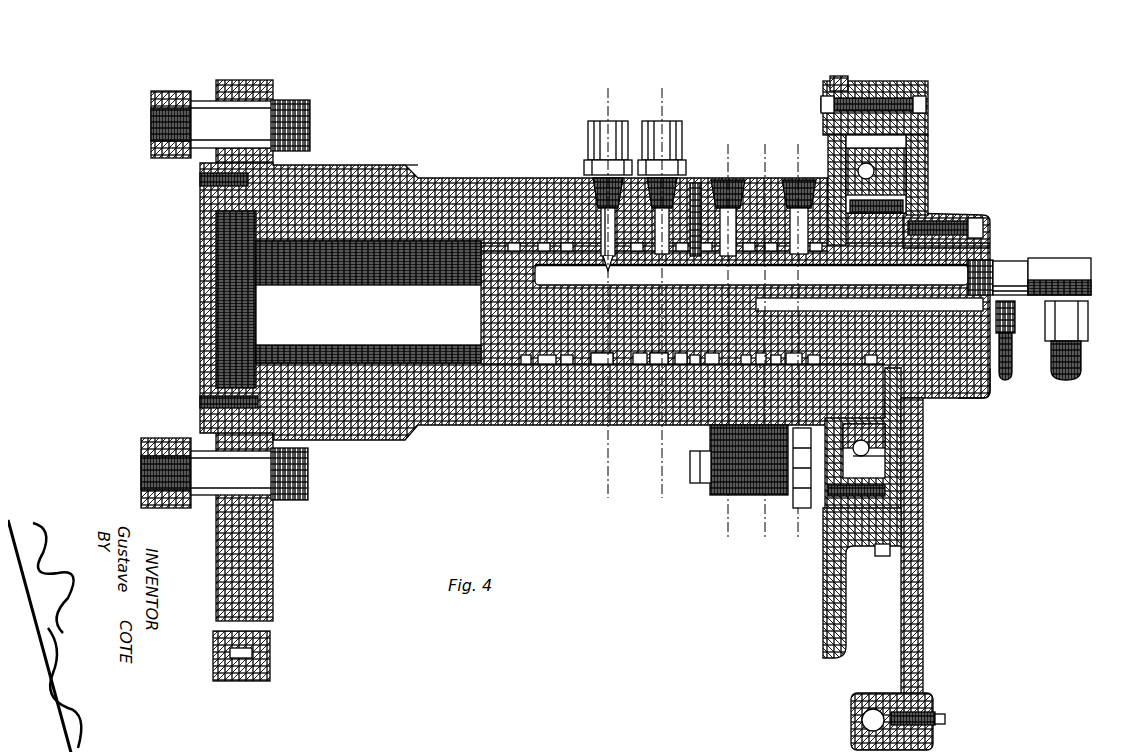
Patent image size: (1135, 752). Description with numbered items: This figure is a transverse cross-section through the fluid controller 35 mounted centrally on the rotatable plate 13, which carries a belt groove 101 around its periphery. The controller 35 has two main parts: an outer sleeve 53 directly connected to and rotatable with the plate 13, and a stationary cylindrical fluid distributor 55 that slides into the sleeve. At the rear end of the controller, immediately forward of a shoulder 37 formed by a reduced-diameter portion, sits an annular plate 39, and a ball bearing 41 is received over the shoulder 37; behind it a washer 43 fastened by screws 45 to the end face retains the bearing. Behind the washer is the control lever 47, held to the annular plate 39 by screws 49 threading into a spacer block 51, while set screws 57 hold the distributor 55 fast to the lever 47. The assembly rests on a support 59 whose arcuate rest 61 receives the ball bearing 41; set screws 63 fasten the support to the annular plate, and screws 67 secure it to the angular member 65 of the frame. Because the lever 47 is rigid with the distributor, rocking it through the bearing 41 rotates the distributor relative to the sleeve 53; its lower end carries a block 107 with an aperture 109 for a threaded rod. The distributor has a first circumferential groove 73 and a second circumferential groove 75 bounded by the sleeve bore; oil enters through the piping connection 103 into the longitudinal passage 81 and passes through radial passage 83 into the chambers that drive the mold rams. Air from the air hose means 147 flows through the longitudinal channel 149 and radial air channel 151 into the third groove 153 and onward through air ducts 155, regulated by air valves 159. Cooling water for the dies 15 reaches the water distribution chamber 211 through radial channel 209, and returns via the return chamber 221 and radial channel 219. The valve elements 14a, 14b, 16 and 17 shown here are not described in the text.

The plate 13 is at (255, 545).
The needle valve 14a is at (616, 80).
The needle valve 14b is at (669, 80).
The dies 15 is at (735, 135).
The valve port 16 is at (802, 135).
The passage port 17 is at (769, 135).
The fluid controller 35 is at (422, 143).
The shoulder 37 is at (822, 162).
The annular plate 39 is at (833, 65).
The ball bearing 41 is at (883, 443).
The washer 43 is at (896, 175).
The screws 45 is at (898, 198).
The control lever 47 is at (897, 594).
The screws 49 is at (851, 88).
The spacer block 51 is at (920, 115).
The outer sleeve 53 is at (460, 168).
The fluid distributor 55 is at (978, 376).
The set screws 57 is at (980, 213).
The support 59 is at (917, 509).
The arcuate rest 61 is at (890, 457).
The set screws 63 is at (890, 481).
The angular member 65 is at (817, 588).
The screws 67 is at (883, 542).
The first circumferential groove 73 is at (590, 357).
The second circumferential groove 75 is at (643, 358).
The longitudinal passage 81 is at (572, 265).
The radial passage 83 is at (601, 258).
The groove 101 is at (256, 650).
The piping connection 103 is at (1073, 352).
The block 107 is at (910, 693).
The aperture 109 is at (857, 710).
The air hose means 147 is at (1007, 362).
The longitudinal channel 149 is at (990, 254).
The radial air channel 151 is at (750, 305).
The third groove 153 is at (751, 290).
The air duct 155 is at (752, 360).
The air valve 159 is at (720, 468).
The radial channel 209 is at (779, 170).
The water distribution chamber 211 is at (713, 190).
The radial channel 219 is at (730, 200).
The return chamber 221 is at (852, 234).